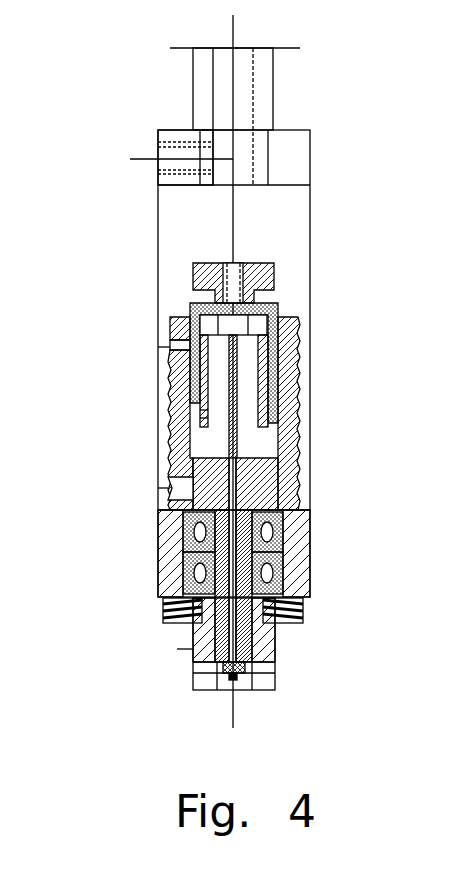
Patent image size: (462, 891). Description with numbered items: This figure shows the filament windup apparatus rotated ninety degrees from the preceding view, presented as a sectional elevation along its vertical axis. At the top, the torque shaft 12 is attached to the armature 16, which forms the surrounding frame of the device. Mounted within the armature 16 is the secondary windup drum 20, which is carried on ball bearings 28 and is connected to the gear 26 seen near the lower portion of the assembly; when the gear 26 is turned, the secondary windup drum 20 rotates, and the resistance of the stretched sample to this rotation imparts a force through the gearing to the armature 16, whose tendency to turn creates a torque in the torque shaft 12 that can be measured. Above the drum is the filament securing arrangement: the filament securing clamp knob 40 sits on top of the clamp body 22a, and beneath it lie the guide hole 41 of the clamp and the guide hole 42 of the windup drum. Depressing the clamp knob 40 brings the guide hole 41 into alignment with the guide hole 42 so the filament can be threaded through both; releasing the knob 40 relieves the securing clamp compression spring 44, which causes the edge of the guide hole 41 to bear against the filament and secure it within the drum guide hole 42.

The torque shaft 12 is at (273, 98).
The armature 16 is at (125, 102).
The secondary windup drum 20 is at (155, 364).
The cup member 22a is at (139, 287).
The gear 26 is at (188, 624).
The bearings 28 is at (185, 558).
The filament securing clamp knob 40 is at (149, 205).
The guide hole 41 is at (140, 307).
The guide hole 42 is at (108, 327).
The securing clamp compression spring 44 is at (143, 498).